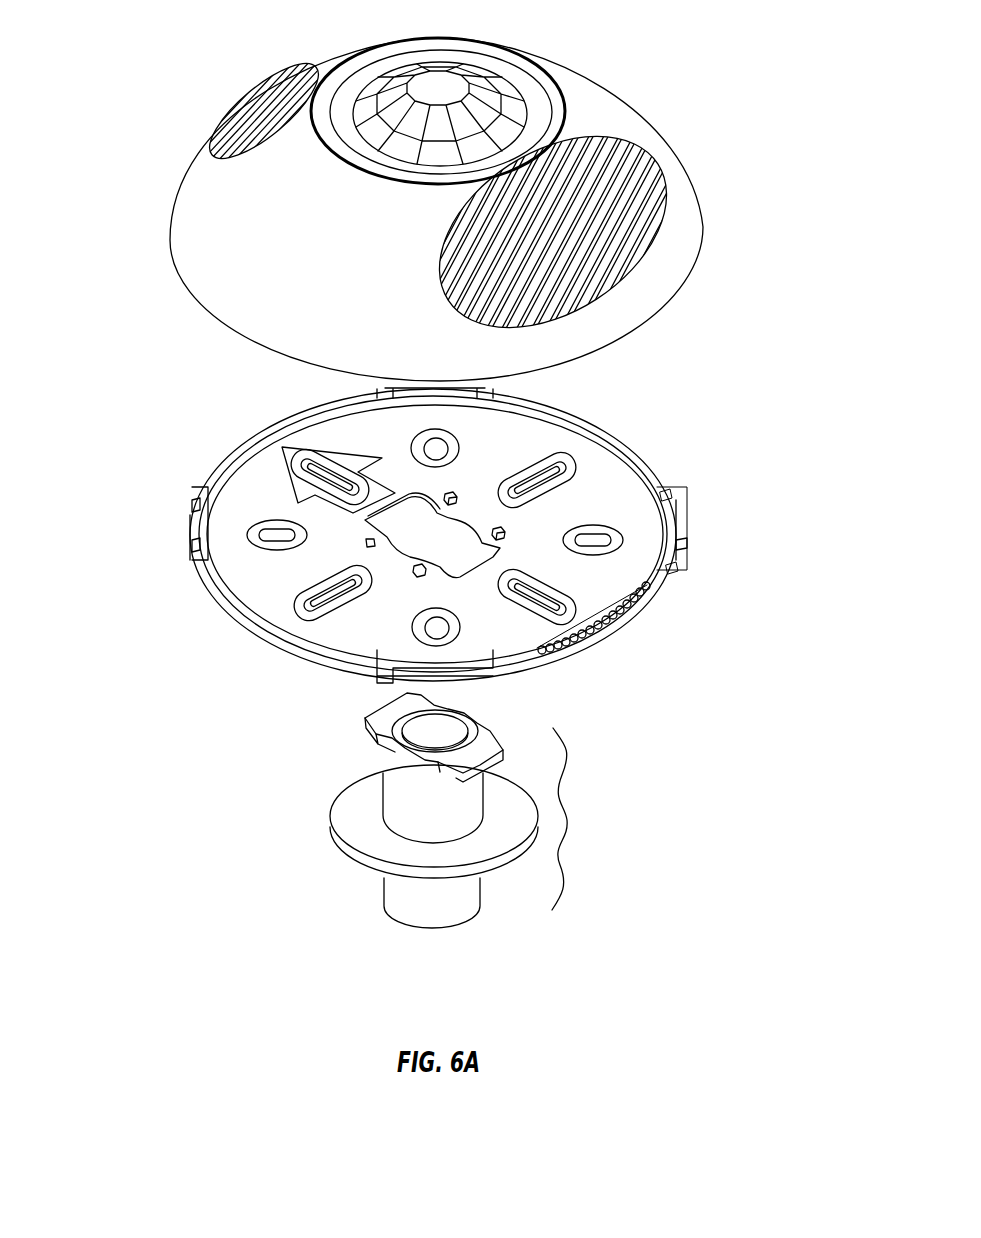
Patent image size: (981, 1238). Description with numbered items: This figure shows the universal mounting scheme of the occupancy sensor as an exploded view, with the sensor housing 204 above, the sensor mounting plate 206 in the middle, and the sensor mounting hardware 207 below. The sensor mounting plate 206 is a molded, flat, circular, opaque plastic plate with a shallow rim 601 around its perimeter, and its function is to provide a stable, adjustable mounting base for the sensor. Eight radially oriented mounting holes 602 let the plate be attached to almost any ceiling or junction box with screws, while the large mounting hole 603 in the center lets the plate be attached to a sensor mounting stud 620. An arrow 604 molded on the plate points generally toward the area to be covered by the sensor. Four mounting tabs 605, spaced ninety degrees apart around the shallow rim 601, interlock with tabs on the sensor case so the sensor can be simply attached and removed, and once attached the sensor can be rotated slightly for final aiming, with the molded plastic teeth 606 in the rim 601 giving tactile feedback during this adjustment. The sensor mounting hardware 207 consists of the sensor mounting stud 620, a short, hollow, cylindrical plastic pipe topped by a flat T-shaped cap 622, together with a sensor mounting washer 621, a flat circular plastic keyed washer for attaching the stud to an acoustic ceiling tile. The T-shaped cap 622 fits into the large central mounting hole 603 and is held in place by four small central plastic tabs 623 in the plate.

The housing cover 204 is at (698, 190).
The shallow rim 601 is at (308, 408).
The arrow 604 is at (282, 448).
The mounting holes 602 is at (300, 605).
The central plastic tabs 623 is at (504, 529).
The sensor mounting plate 206 is at (670, 478).
The mounting tabs 605 is at (688, 547).
The large mounting hole 603 is at (445, 540).
The molded plastic teeth 606 is at (600, 640).
The T-shaped cap 622 is at (363, 716).
The sensor mounting washer 621 is at (331, 813).
The sensor mounting stud 620 is at (384, 900).
The sensor mounting hardware 207 is at (569, 815).